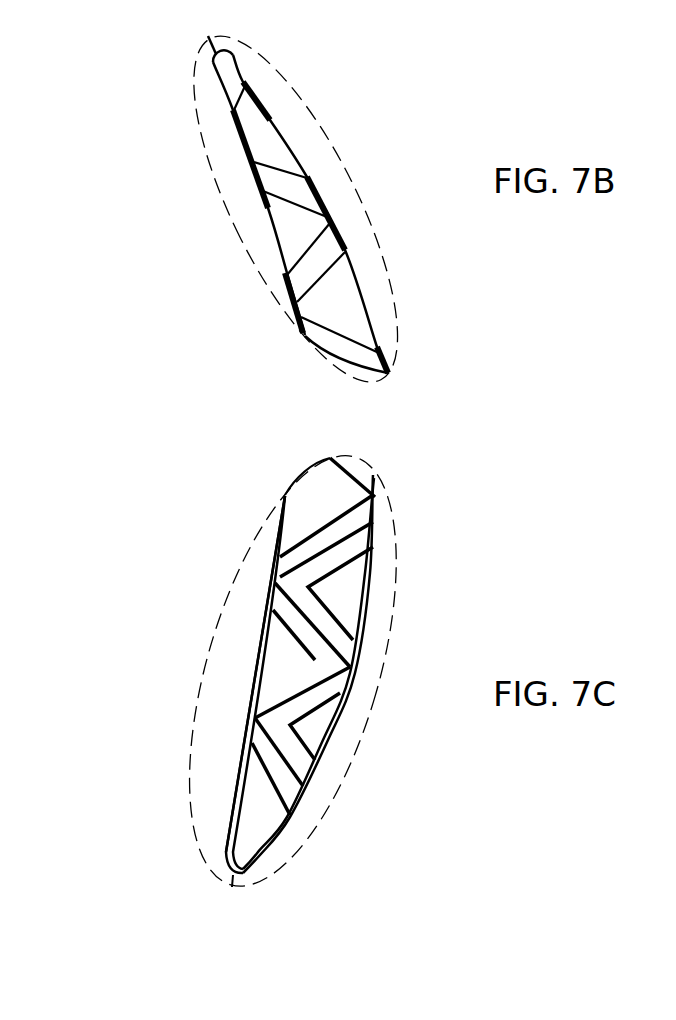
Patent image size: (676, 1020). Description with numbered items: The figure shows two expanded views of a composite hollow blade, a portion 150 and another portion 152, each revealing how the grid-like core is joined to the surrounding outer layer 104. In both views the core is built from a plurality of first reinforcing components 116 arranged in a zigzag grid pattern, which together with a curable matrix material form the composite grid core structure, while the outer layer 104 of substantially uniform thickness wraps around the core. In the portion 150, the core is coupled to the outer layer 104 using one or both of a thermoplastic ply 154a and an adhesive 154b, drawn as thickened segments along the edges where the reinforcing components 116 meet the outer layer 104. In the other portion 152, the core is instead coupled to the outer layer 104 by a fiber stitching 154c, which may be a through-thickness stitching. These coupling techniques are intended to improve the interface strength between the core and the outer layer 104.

In FIG. 7B, the portion 150 is at (203, 128).
In FIG. 7C, the another portion 152 is at (243, 565).
In FIG. 7B, the thermoplastic ply 154a is at (250, 157).
In FIG. 7B, the adhesive 154b is at (331, 229).
In FIG. 7C, the fiber stitching 154c is at (337, 720).
In FIG. 7B, the first reinforcing components 116 is at (248, 115).
In FIG. 7C, the first reinforcing components 116 is at (317, 662).
In FIG. 7C, the outer layer 104 is at (430, 744).